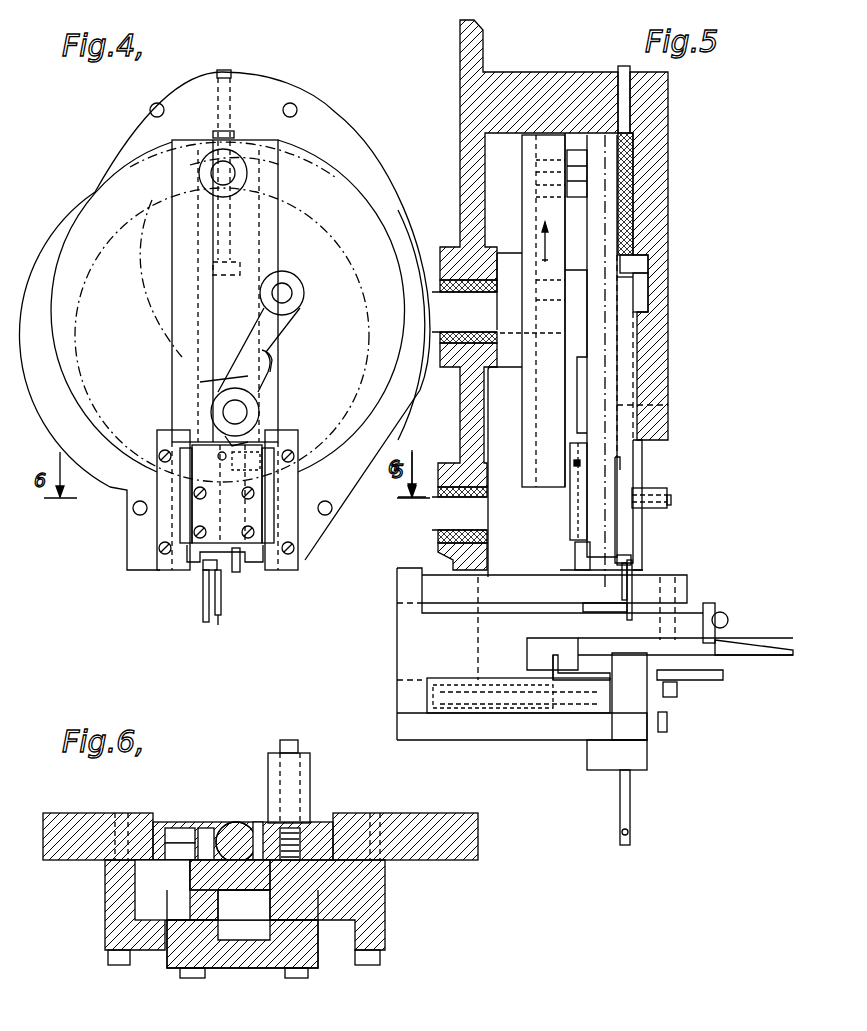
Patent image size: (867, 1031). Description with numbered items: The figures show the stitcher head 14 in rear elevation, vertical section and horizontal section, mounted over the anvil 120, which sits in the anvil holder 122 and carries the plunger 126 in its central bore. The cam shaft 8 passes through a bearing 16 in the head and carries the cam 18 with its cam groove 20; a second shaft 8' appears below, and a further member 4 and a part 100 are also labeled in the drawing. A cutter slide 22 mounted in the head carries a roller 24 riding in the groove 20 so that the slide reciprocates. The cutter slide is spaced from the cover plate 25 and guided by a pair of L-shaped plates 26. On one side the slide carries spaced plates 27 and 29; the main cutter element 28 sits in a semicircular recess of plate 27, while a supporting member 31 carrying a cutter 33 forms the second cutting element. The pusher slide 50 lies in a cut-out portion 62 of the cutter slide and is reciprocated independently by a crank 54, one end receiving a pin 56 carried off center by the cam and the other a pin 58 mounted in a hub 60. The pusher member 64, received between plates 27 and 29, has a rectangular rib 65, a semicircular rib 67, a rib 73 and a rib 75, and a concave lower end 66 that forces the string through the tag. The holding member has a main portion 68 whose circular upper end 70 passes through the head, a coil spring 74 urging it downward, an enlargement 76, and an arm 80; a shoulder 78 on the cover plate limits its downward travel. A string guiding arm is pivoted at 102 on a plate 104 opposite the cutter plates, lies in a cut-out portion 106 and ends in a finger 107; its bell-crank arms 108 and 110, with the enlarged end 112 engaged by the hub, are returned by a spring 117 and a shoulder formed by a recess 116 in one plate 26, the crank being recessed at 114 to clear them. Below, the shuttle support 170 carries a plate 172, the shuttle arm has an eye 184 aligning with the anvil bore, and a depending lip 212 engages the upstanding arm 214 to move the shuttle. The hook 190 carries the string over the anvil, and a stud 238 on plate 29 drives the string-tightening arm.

In FIG. 5, the housing wall 4 is at (460, 36).
In FIG. 5, the cam shaft 8 is at (447, 348).
In FIG. 5, the shaft 8' is at (441, 528).
In FIG. 5, the head 14 is at (512, 95).
In FIG. 5, the bearing 16 is at (443, 384).
In FIG. 4, the cam 18 is at (95, 195).
In FIG. 5, the cam 18 is at (530, 135).
In FIG. 4, the cam groove 20 is at (333, 195).
In FIG. 5, the cam groove 20 is at (545, 412).
In FIG. 4, the cutter slide 22 is at (178, 160).
In FIG. 5, the cutter slide 22 is at (593, 203).
In FIG. 6, the cutter slide 22 is at (142, 882).
In FIG. 4, the roller 24 is at (236, 152).
In FIG. 5, the roller 24 is at (578, 150).
In FIG. 4, the cover plate 25 is at (103, 152).
In FIG. 5, the cover plate 25 is at (655, 378).
In FIG. 6, the cover plate 25 is at (414, 815).
In FIG. 4, the L-shaped plates 26 is at (168, 574).
In FIG. 5, the L-shaped plates 26 is at (576, 555).
In FIG. 6, the L-shaped plates 26 is at (105, 935).
In FIG. 6, the plate 27 is at (165, 832).
In FIG. 4, the main cutter element 28 is at (206, 578).
In FIG. 5, the main cutter element 28 is at (621, 580).
In FIG. 6, the main cutter element 28 is at (218, 842).
In FIG. 5, the plate 29 is at (640, 485).
In FIG. 6, the plate 29 is at (318, 828).
In FIG. 5, the supporting member 31 is at (636, 538).
In FIG. 5, the cutter 33 is at (632, 575).
In FIG. 6, the cutter 33 is at (236, 832).
In FIG. 4, the pusher slide 50 is at (280, 156).
In FIG. 5, the pusher slide 50 is at (645, 165).
In FIG. 6, the pusher slide 50 is at (215, 860).
In FIG. 4, the crank 54 is at (292, 312).
In FIG. 5, the crank 54 is at (575, 335).
In FIG. 4, the pin 56 is at (290, 288).
In FIG. 5, the pin 56 is at (530, 270).
In FIG. 4, the pin 58 is at (248, 411).
In FIG. 5, the pin 58 is at (672, 404).
In FIG. 4, the hub 60 is at (276, 438).
In FIG. 5, the hub 60 is at (575, 432).
In FIG. 4, the cut-out portion 62 is at (180, 172).
In FIG. 5, the cut-out portion 62 is at (645, 146).
In FIG. 6, the cut-out portion 62 is at (190, 872).
In FIG. 4, the pusher member 64 is at (222, 608).
In FIG. 5, the pusher member 64 is at (632, 590).
In FIG. 6, the pusher member 64 is at (232, 822).
In FIG. 6, the rib 65 is at (260, 822).
In FIG. 4, the concave lower end 66 is at (219, 616).
In FIG. 6, the semi-circular rib 67 is at (235, 928).
In FIG. 5, the main portion 68 is at (645, 348).
In FIG. 5, the upper end 70 is at (628, 108).
In FIG. 6, the rib 73 is at (246, 820).
In FIG. 5, the coil spring 74 is at (634, 216).
In FIG. 6, the rib 75 is at (258, 822).
In FIG. 5, the enlargement 76 is at (650, 264).
In FIG. 5, the shoulder 78 is at (650, 303).
In FIG. 4, the arm 80 is at (203, 612).
In FIG. 5, the arm 80 is at (583, 608).
In FIG. 6, the arm 80 is at (190, 845).
In FIG. 4, the stop strip 100 is at (242, 573).
In FIG. 5, the stop strip 100 is at (620, 572).
In FIG. 6, the stop strip 100 is at (305, 812).
In FIG. 4, the pivot 102 is at (148, 394).
In FIG. 5, the pivot 102 is at (575, 455).
In FIG. 4, the plate 104 is at (256, 500).
In FIG. 5, the plate 104 is at (568, 497).
In FIG. 6, the plate 104 is at (312, 968).
In FIG. 4, the cut-out portion 106 is at (262, 520).
In FIG. 6, the cut-out portion 106 is at (290, 970).
In FIG. 6, the finger 107 is at (258, 908).
In FIG. 4, the arm 108 is at (268, 400).
In FIG. 5, the arm 108 is at (578, 387).
In FIG. 4, the arm 110 is at (184, 436).
In FIG. 4, the enlarged end 112 is at (274, 360).
In FIG. 4, the recess 114 is at (212, 381).
In FIG. 4, the recess 116 is at (184, 468).
In FIG. 5, the recess 116 is at (572, 476).
In FIG. 4, the spring 117 is at (262, 468).
In FIG. 5, the anvil 120 is at (618, 650).
In FIG. 5, the anvil holder 122 is at (640, 752).
In FIG. 5, the plunger 126 is at (630, 795).
In FIG. 5, the shuttle support 170 is at (520, 715).
In FIG. 5, the plate 172 is at (678, 700).
In FIG. 5, the eye 184 is at (700, 676).
In FIG. 5, the hook 190 is at (748, 642).
In FIG. 5, the depending lip 212 is at (672, 672).
In FIG. 5, the upstanding arm 214 is at (550, 665).
In FIG. 5, the stud 238 is at (650, 508).
In FIG. 6, the stud 238 is at (308, 760).